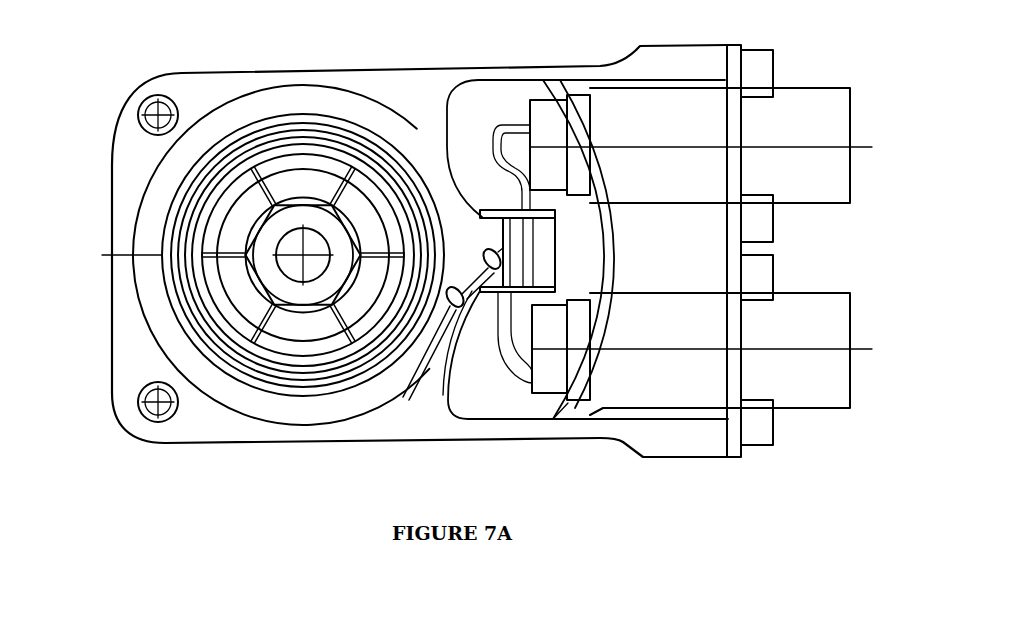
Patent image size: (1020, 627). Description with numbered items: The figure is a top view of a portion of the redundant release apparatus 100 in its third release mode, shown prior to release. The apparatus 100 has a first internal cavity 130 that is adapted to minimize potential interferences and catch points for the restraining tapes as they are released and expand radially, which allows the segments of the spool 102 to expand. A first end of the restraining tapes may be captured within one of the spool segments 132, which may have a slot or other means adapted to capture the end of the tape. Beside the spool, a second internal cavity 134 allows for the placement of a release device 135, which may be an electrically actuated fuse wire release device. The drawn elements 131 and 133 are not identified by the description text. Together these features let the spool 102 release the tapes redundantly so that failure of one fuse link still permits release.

The redundant release apparatus 100 is at (264, 72).
The spool 102 is at (212, 207).
The first internal cavity 130 is at (367, 86).
The lower lead wire 131 is at (458, 302).
The spool segment 132 is at (237, 383).
The upper lead wire 133 is at (486, 255).
The second internal cavity 134 is at (514, 409).
The release device 135 is at (555, 242).